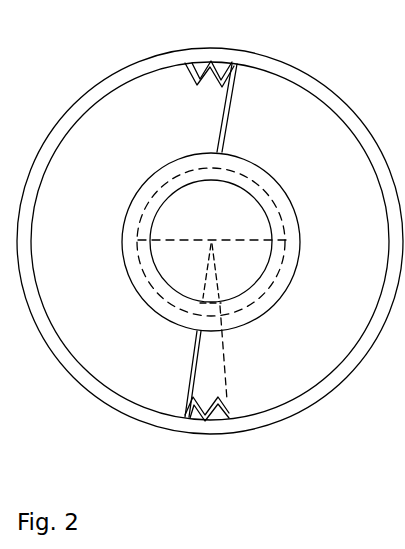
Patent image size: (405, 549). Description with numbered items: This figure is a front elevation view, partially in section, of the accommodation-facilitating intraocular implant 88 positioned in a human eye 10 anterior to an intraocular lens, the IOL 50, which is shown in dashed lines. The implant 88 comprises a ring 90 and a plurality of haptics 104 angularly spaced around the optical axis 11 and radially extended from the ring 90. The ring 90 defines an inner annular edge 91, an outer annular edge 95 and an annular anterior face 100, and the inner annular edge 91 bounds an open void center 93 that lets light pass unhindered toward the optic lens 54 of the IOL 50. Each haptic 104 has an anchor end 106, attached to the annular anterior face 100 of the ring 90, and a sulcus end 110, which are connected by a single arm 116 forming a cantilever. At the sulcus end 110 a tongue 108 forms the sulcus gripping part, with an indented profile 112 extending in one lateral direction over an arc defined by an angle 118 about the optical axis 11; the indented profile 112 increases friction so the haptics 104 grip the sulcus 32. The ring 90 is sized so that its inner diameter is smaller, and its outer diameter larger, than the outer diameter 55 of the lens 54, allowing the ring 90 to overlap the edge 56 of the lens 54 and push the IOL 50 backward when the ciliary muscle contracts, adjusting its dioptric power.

The eye 10 is at (72, 78).
The optical axis 11 is at (212, 240).
The sulcus 32 is at (100, 387).
The intraocular lens (IOL) 50 is at (285, 263).
The optic lens 54 is at (266, 290).
The outer diameter of the lens 55 is at (172, 240).
The edge of the lens 56 is at (268, 284).
The accommodation-facilitating intraocular implant 88 is at (404, 50).
The ring 90 is at (404, 120).
The inner annular edge 91 is at (163, 272).
The open void center 93 is at (193, 215).
The outer annular edge 95 is at (142, 304).
The annular anterior face 100 is at (298, 227).
The haptics 104 is at (235, 108).
The anchor end 106 is at (212, 150).
The tongue 108 is at (236, 63).
The sulcus end 110 is at (190, 70).
The indented profile 112 is at (202, 62).
The arm 116 is at (228, 126).
The angle 118 is at (229, 304).